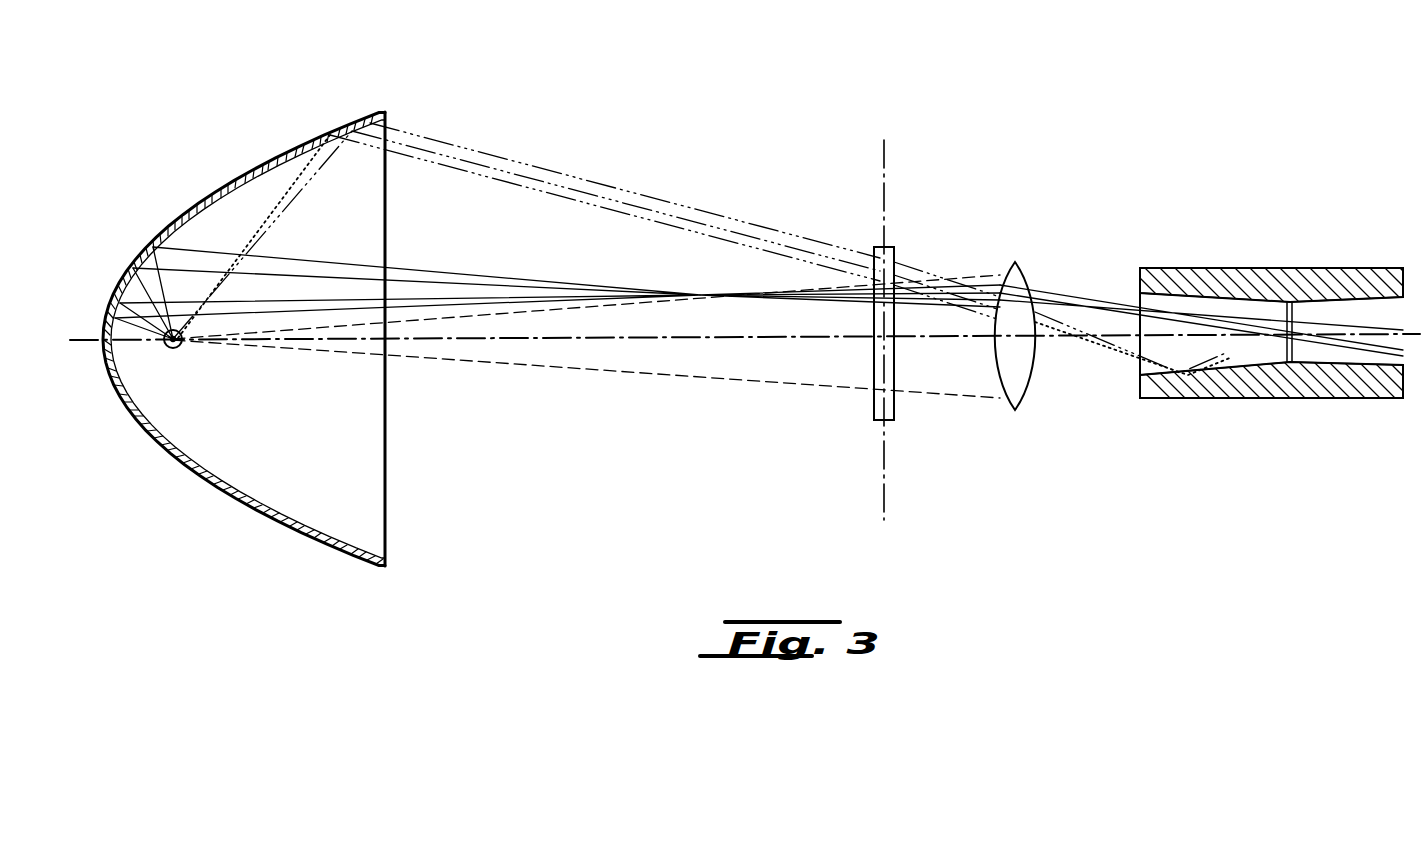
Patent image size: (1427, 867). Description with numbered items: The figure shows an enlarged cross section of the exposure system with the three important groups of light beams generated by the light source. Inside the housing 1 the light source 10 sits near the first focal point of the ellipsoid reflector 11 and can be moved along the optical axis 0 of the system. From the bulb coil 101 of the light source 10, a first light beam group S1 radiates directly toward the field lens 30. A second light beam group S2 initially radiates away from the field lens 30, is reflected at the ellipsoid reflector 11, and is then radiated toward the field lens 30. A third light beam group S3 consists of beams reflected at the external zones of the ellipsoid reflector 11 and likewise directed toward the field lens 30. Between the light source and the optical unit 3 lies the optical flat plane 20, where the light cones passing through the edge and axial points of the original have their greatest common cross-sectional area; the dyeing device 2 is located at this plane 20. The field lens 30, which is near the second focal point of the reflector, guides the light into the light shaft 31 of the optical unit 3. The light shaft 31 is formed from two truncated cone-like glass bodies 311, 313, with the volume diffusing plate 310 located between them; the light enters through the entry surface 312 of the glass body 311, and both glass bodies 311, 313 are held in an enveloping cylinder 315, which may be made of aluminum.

The housing 1 is at (186, 132).
The light source 10 is at (165, 350).
The ellipsoid reflector 11 is at (185, 207).
The bulb coil 101 is at (178, 349).
The optical axis 0 is at (734, 337).
The dyeing device 2 is at (895, 262).
The optical flat plane 20 is at (886, 158).
The field lens 30 is at (1013, 395).
The optical unit 3 is at (1186, 98).
The light shaft 31 is at (1303, 262).
The diffusing plate 310 is at (1287, 398).
The glass body 311 is at (1162, 305).
The entry surface 312 is at (1140, 303).
The glass body 313 is at (1365, 312).
The cylinder 315 is at (1252, 283).
The light beam group S1 is at (346, 352).
The second light beam group S2 is at (155, 285).
The third light beam group S3 is at (478, 162).